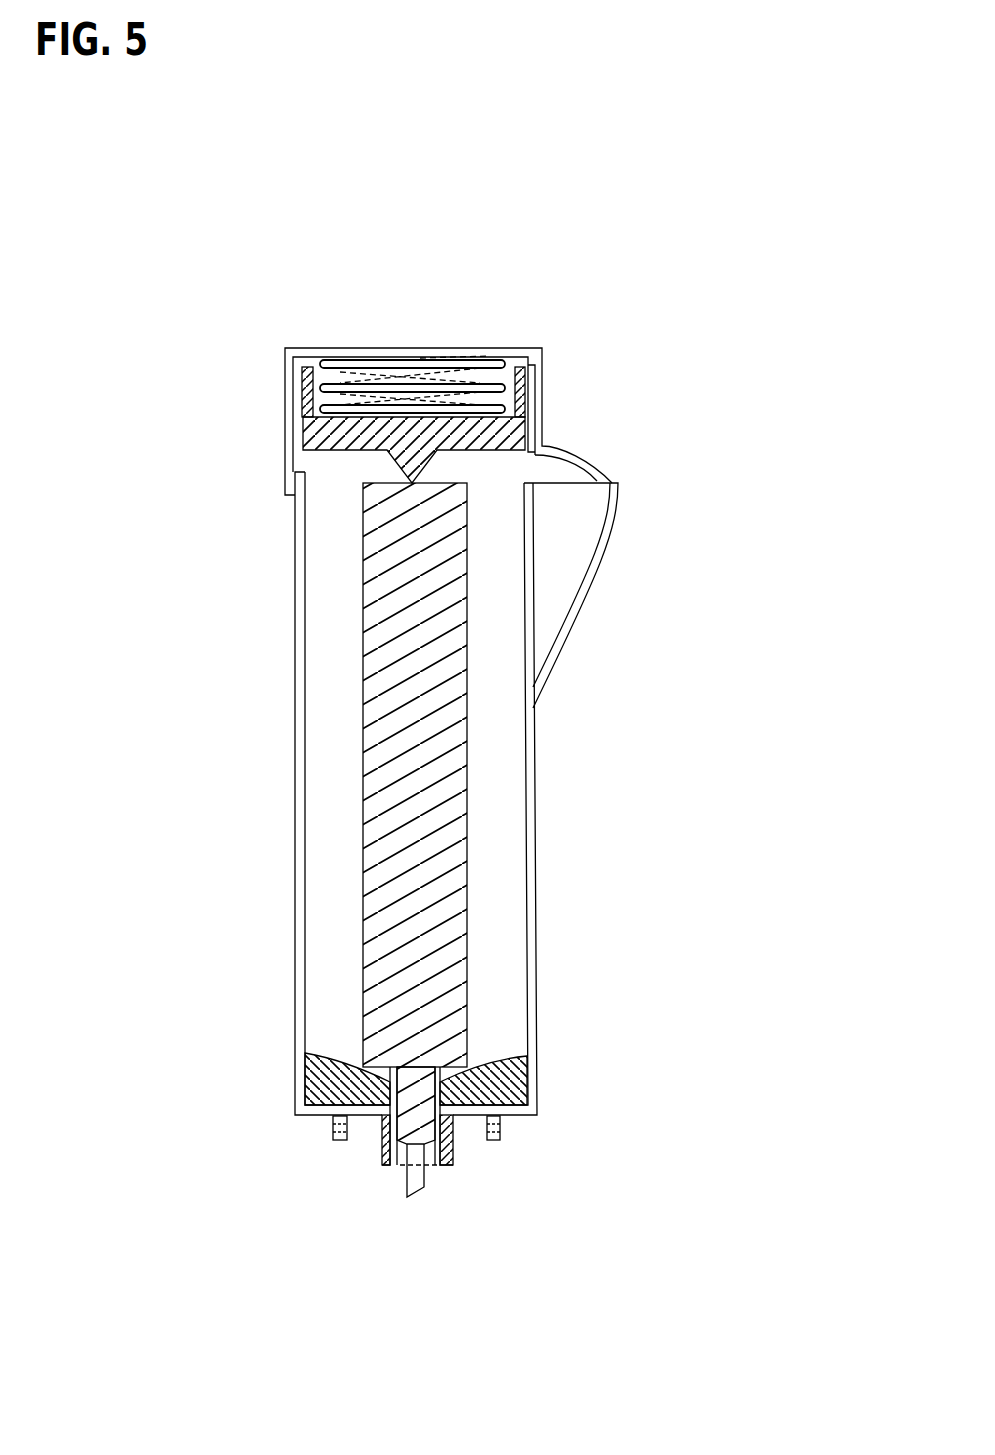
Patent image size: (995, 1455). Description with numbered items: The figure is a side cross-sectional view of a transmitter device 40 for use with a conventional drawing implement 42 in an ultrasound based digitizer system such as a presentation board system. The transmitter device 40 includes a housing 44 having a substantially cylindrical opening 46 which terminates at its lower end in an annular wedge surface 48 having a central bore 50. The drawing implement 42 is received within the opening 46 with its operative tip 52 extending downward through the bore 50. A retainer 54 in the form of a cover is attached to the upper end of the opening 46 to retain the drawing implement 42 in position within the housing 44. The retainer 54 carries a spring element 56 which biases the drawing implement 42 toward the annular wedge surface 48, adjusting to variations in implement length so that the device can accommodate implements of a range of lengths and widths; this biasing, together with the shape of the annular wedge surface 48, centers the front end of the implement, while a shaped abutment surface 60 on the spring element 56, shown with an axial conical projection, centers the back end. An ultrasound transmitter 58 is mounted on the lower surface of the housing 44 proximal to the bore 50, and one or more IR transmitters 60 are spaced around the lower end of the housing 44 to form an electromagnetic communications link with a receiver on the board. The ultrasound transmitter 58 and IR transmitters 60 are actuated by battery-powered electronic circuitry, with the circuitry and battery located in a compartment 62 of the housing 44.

The transmitter device 40 is at (745, 413).
The drawing implement 42 is at (362, 600).
The housing 44 is at (291, 776).
The cylindrical opening 46 is at (335, 907).
The annular wedge surface 48 is at (308, 1056).
The central bore 50 is at (532, 1096).
The operative tip 52 is at (410, 1192).
The retainer 54 is at (293, 378).
The spring element 56 is at (490, 380).
The ultrasound transmitter 58 is at (453, 1162).
The IR transmitter 60 is at (342, 452).
The compartment 62 is at (593, 572).